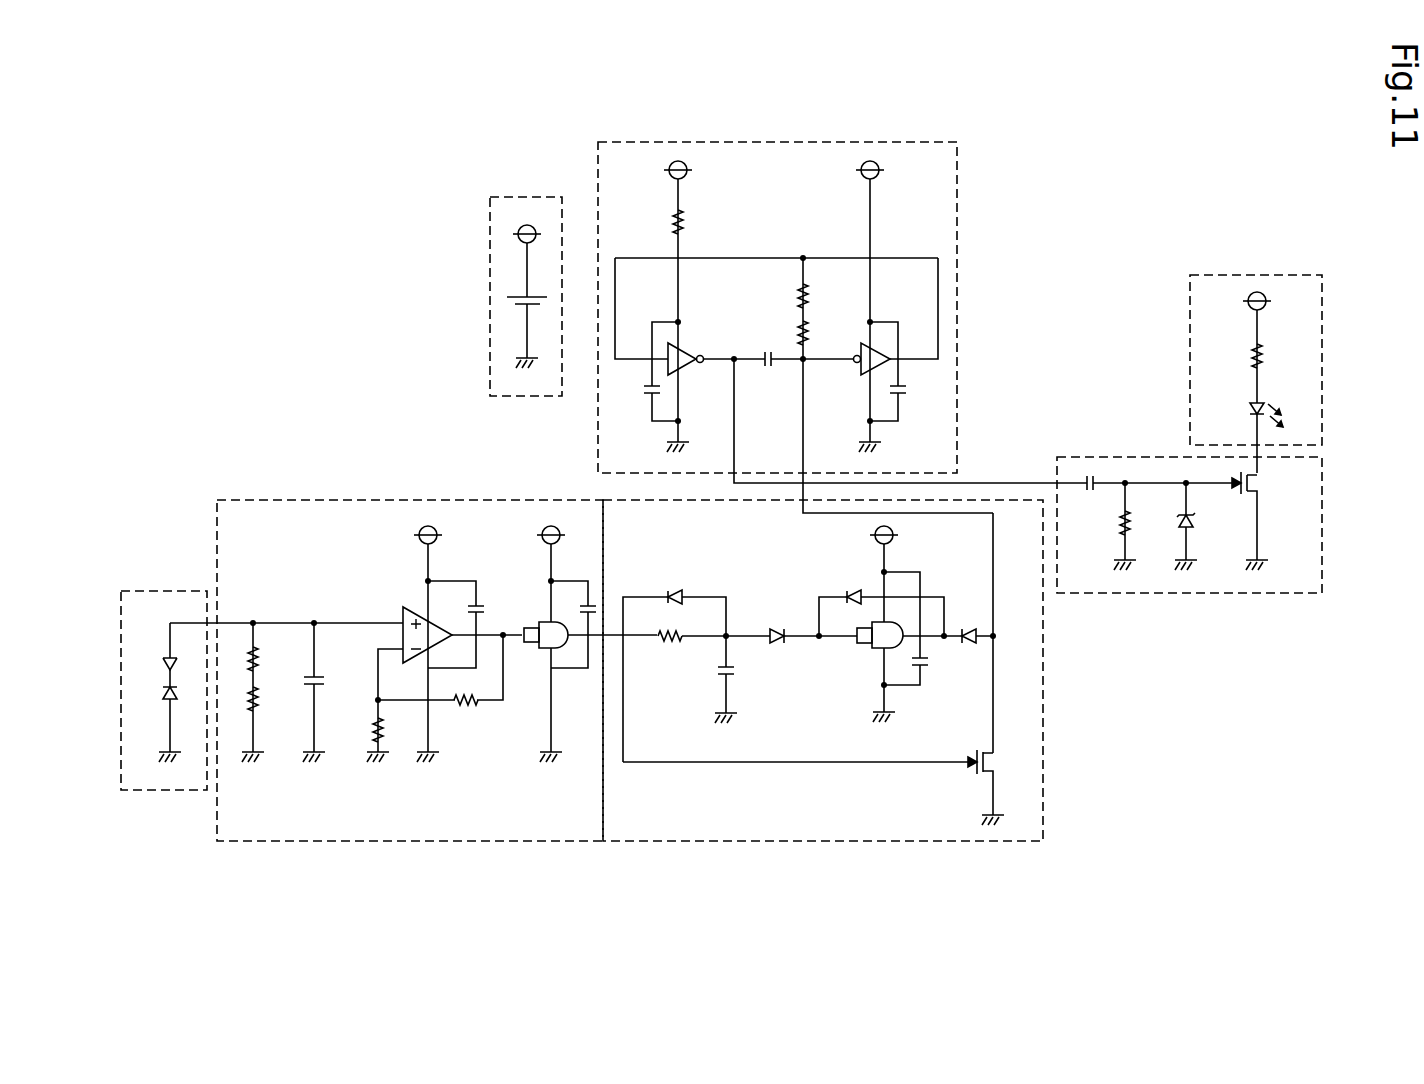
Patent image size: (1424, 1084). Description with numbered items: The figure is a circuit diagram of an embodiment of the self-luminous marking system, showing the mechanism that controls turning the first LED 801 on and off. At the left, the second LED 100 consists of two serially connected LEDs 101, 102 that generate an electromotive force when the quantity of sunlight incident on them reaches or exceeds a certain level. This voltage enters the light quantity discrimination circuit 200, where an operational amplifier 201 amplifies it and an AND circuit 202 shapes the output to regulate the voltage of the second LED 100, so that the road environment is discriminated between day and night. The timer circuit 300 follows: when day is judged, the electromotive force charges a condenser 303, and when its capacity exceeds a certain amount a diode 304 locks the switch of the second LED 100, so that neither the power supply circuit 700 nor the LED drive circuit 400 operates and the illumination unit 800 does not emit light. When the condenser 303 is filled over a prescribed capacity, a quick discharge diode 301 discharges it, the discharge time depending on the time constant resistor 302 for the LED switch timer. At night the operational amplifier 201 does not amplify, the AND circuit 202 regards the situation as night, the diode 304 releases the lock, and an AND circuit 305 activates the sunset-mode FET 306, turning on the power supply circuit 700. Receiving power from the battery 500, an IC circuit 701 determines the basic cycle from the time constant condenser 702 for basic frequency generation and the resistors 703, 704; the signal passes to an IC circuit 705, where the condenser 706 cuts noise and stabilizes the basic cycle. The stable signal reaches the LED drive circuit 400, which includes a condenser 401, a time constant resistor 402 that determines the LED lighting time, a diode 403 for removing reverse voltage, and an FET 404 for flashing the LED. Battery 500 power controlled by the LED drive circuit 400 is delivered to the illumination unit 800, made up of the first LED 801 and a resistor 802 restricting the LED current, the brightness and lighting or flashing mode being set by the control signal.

The second LED 100 is at (170, 591).
The LED 101 is at (151, 664).
The LED 102 is at (151, 697).
The light quantity discrimination circuit 200 is at (383, 500).
The operational amplifier 201 is at (436, 644).
The AND circuit 202 is at (578, 644).
The timer circuit 300 is at (800, 841).
The quick discharge diode 301 is at (674, 597).
The time constant resistor 302 is at (711, 654).
The condenser 303 is at (750, 679).
The diode 304 is at (849, 603).
The AND circuit 305 is at (895, 624).
The sunset-mode FET 306 is at (835, 783).
The LED drive circuit 400 is at (1198, 593).
The condenser 401 is at (1090, 470).
The time constant resistor 402 is at (1101, 526).
The diode 403 is at (1210, 526).
The FET 404 is at (1274, 517).
The battery 500 is at (527, 197).
The power supply circuit 700 is at (790, 142).
The IC circuit 701 is at (716, 370).
The time constant condenser 702 is at (773, 342).
The resistor 703 is at (830, 289).
The resistor 704 is at (830, 339).
The IC circuit 705 is at (846, 370).
The condenser 706 is at (914, 371).
The illumination unit 800 is at (1262, 275).
The first LED 801 is at (1243, 412).
The resistor 802 is at (1286, 360).